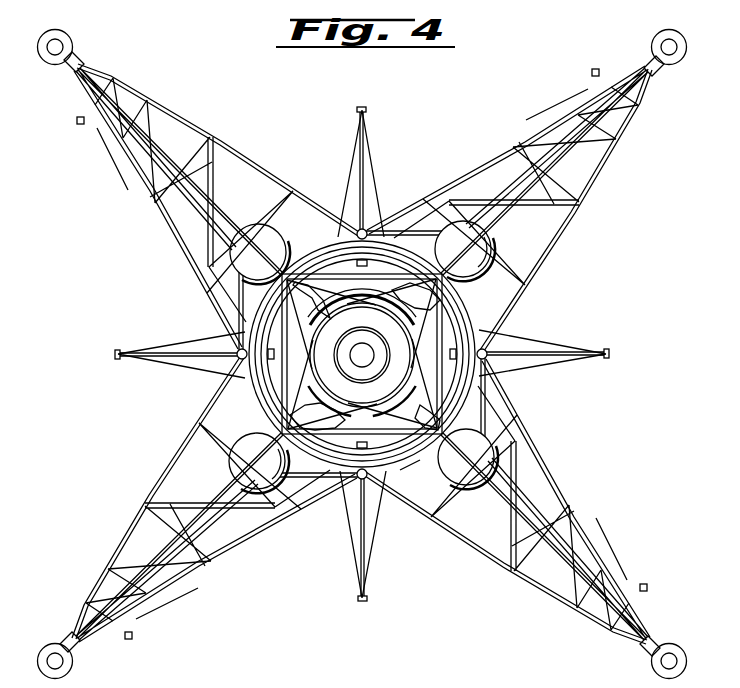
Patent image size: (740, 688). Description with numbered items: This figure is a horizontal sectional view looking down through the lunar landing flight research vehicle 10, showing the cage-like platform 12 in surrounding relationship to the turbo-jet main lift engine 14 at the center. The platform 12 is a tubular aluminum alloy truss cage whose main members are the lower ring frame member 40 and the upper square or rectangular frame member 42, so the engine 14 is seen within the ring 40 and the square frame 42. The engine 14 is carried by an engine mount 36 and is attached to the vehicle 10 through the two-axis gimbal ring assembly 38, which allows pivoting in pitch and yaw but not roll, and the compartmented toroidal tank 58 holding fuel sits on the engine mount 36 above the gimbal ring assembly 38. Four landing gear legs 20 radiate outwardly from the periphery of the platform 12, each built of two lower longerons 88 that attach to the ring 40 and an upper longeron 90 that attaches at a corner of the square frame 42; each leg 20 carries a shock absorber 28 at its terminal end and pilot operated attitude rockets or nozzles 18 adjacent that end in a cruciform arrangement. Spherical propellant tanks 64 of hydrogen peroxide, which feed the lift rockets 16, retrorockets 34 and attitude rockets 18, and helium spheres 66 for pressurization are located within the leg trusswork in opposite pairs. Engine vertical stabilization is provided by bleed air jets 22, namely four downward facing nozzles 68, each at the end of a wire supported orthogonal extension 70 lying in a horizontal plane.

The lunar landing flight research vehicle 10 is at (203, 333).
The cage-like platform 12 is at (246, 388).
The turbo-jet main lift engine 14 is at (352, 380).
The throttleable lift rockets 16 is at (236, 360).
The pilot operated rockets, jets or nozzles 18 is at (80, 130).
The landing gear legs 20 is at (240, 158).
The bleed air jets 22 is at (370, 116).
The shock absorber 28 is at (82, 60).
The retrorockets 34 is at (370, 232).
The engine mount 36 is at (406, 408).
The two-axis gimbal ring assembly 38 is at (487, 320).
The lower ring frame member 40 is at (392, 490).
The upper square or rectangular frame member 42 is at (320, 408).
The compartmented toroidal tank 58 is at (366, 300).
The spherical propellant tanks 64 is at (361, 355).
The helium spheres 66 is at (238, 290).
The downward facing nozzles 68 is at (366, 106).
The wire supported orthogonal extension 70 is at (366, 170).
The lower main members or longerons 88 is at (195, 126).
The upper main member or longeron 90 is at (173, 112).